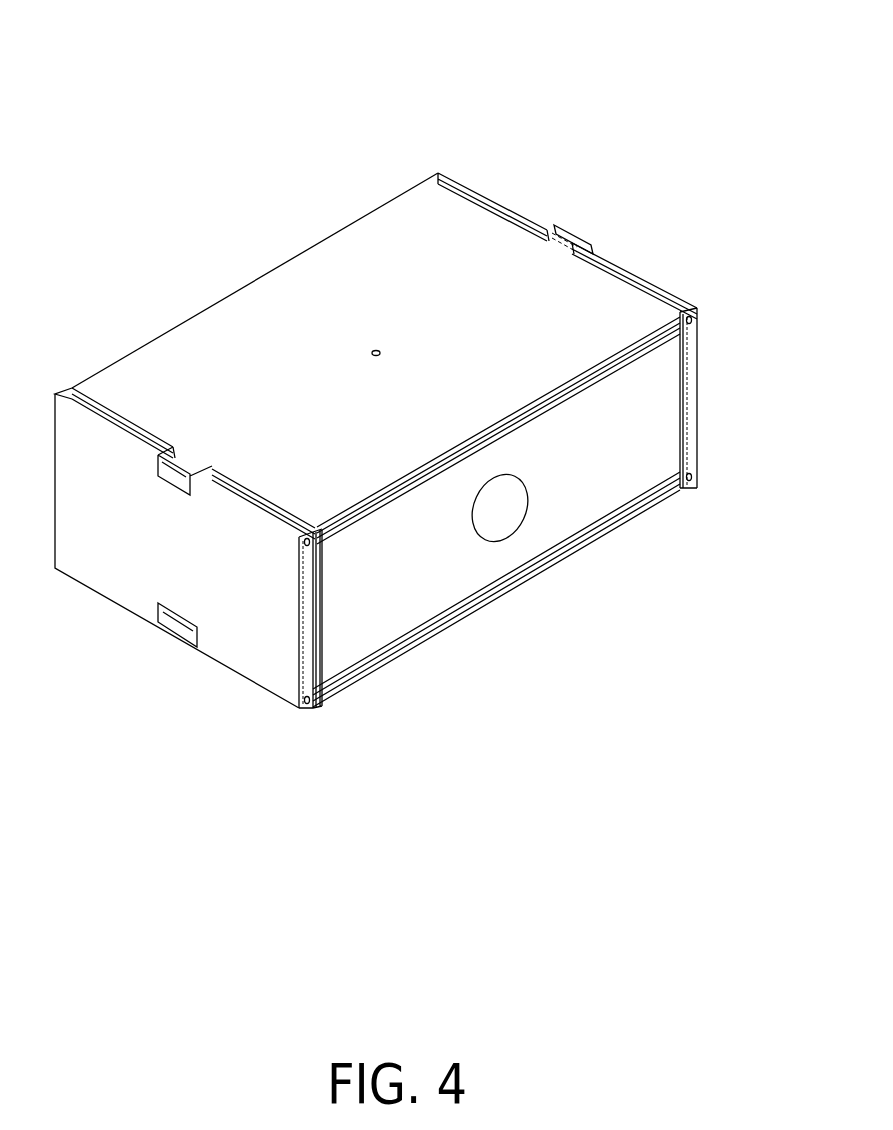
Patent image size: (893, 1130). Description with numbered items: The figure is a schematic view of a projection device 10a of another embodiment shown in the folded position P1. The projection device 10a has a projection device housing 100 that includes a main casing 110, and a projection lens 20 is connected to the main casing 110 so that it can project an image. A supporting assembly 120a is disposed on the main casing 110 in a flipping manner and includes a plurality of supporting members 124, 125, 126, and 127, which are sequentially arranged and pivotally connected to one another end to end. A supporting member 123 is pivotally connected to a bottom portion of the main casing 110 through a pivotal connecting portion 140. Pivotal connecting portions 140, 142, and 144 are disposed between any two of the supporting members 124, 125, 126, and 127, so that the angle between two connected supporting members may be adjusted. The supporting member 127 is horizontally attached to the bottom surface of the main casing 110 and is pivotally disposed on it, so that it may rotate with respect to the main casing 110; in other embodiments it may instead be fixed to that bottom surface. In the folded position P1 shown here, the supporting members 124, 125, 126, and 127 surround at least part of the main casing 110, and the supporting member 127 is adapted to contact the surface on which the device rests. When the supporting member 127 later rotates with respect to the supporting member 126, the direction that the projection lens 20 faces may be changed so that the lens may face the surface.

The projection device 10a is at (562, 107).
The projection device housing 100 is at (397, 457).
The main casing 110 is at (350, 612).
The supporting assembly 120a is at (122, 2).
The supporting member 123 is at (490, 196).
The supporting member 124 is at (660, 284).
The supporting member 125 is at (197, 330).
The supporting member 126 is at (265, 670).
The supporting member 127 is at (460, 610).
The pivotal connecting portion 140 is at (572, 230).
The pivotal connecting portion 142 is at (195, 455).
The pivotal connecting portion 144 is at (170, 638).
The projection lens 20 is at (512, 512).
The folded position P1 is at (718, 805).